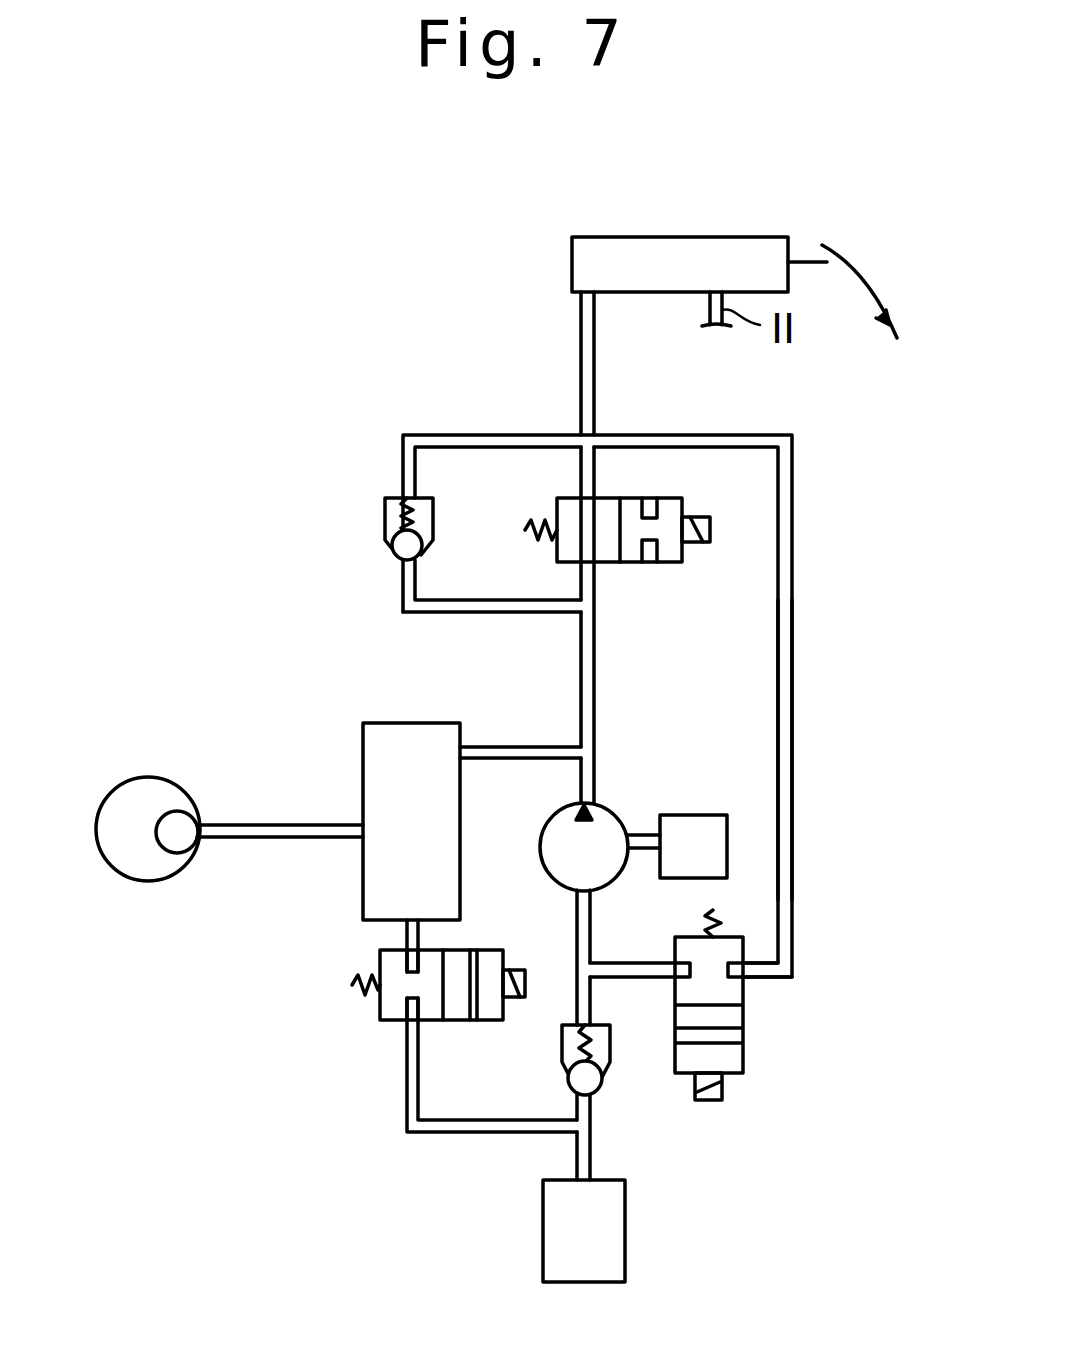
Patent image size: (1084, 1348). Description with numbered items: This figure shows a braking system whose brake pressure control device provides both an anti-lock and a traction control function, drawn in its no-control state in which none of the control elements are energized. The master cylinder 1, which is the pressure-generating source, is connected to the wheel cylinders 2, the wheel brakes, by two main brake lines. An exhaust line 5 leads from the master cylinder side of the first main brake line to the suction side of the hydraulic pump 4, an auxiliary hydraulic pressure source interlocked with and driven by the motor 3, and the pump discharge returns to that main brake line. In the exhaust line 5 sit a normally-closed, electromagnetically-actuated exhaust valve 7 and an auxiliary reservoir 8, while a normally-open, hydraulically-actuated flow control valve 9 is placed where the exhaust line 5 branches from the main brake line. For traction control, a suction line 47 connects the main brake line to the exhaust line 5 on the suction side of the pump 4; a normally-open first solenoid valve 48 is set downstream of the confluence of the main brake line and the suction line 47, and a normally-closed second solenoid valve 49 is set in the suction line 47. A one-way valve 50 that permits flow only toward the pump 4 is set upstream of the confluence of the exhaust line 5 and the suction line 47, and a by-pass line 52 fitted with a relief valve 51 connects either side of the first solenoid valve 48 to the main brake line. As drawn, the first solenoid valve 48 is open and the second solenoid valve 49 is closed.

The master cylinder 1 is at (688, 240).
The wheel cylinders 2 is at (167, 848).
The motor 3 is at (695, 815).
The hydraulic pump 4 is at (606, 810).
The exhaust line 5 is at (432, 1132).
The exhaust valve 7 is at (380, 1015).
The auxiliary reservoir 8 is at (625, 1208).
The flow control valve 9 is at (355, 743).
The suction line 47 is at (792, 690).
The first solenoid valve 48 is at (683, 505).
The second solenoid valve 49 is at (745, 1015).
The one-way valve 50 is at (605, 1080).
The relief valve 51 is at (385, 520).
The by-pass line 52 is at (455, 432).